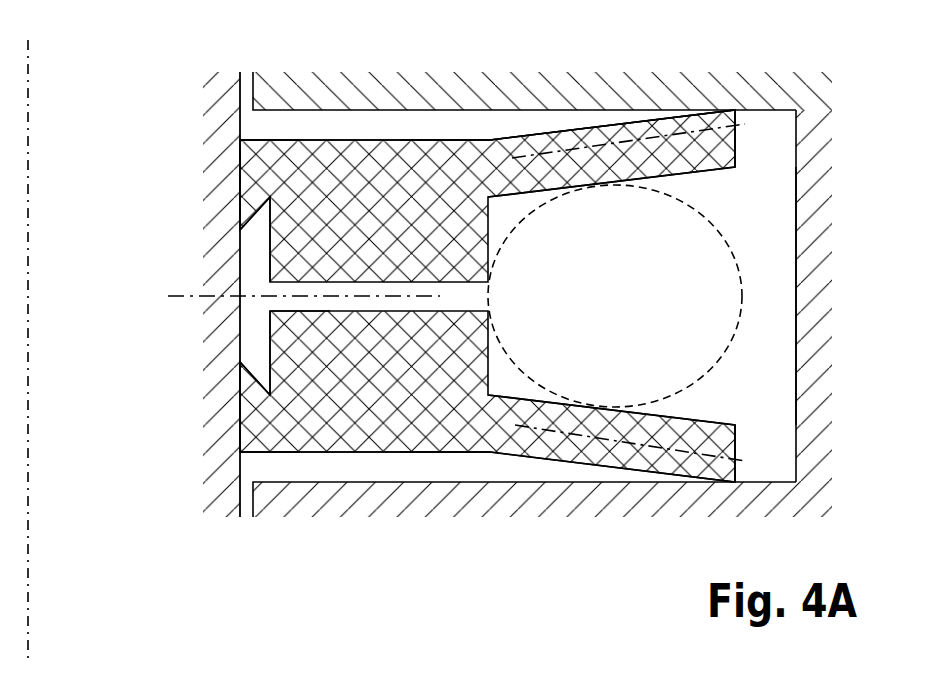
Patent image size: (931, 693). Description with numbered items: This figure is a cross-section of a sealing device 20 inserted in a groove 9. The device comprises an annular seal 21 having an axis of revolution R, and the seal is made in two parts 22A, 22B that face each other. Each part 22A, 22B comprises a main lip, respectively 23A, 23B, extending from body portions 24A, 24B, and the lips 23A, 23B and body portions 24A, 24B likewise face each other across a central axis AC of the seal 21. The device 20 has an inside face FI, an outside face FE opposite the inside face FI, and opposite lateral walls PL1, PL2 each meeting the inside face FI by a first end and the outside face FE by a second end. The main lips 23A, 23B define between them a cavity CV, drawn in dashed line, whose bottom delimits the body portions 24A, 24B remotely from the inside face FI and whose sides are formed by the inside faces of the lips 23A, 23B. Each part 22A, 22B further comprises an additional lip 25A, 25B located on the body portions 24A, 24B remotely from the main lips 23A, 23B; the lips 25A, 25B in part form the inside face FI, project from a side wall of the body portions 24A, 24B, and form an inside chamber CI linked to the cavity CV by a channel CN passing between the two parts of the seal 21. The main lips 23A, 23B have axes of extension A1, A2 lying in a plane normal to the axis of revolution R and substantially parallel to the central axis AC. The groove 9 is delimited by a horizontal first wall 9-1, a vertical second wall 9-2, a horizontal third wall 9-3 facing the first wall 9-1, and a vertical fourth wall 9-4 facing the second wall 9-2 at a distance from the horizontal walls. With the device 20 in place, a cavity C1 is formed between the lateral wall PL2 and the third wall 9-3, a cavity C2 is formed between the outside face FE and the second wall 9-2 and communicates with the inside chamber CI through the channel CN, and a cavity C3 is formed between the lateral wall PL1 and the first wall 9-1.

The axis of revolution R is at (27, 334).
The sealing device 20 is at (475, 299).
The cavity C3 is at (249, 116).
The first part 22A is at (342, 126).
The first lateral wall PL1 is at (428, 138).
The horizontal first wall 9-1 is at (525, 105).
The main lip 23A is at (632, 140).
The annular seal 21 is at (709, 106).
The axis of extension A1 is at (762, 123).
The body portion 24A is at (323, 175).
The inside face FI is at (226, 188).
The outside face FE is at (750, 140).
The additional lip 25A is at (235, 230).
The inside chamber CI is at (241, 282).
The cavity C2 is at (747, 265).
The central axis AC is at (282, 303).
The cavity CV is at (740, 315).
The channel CN is at (271, 327).
The additional lip 25B is at (245, 375).
The body portion 24B is at (293, 412).
The groove 9 is at (513, 308).
The vertical second wall 9-2 is at (798, 468).
The axis of extension A2 is at (757, 464).
The vertical fourth wall 9-4 is at (222, 505).
The cavity C1 is at (285, 474).
The second part 22B is at (327, 464).
The second lateral wall PL2 is at (412, 452).
The horizontal third wall 9-3 is at (488, 483).
The main lip 23B is at (606, 455).